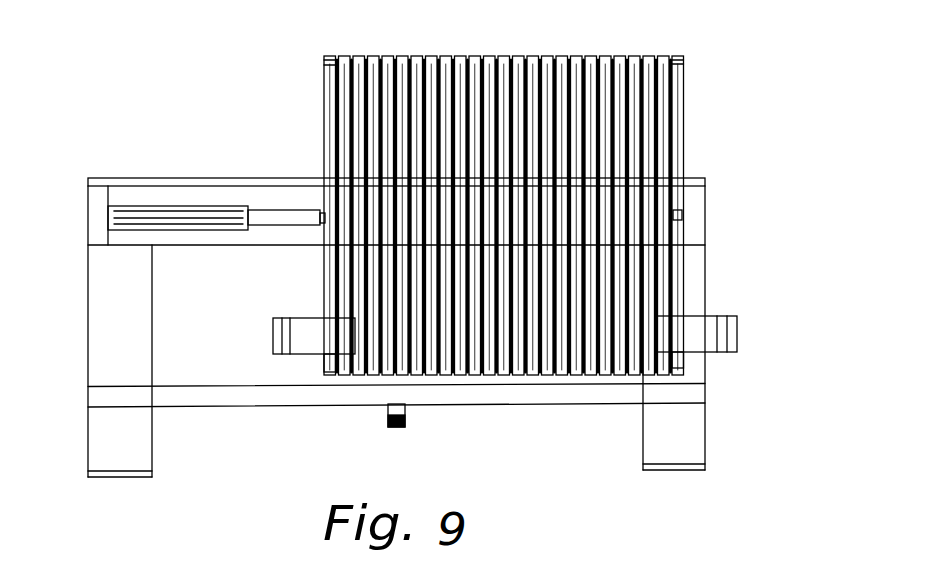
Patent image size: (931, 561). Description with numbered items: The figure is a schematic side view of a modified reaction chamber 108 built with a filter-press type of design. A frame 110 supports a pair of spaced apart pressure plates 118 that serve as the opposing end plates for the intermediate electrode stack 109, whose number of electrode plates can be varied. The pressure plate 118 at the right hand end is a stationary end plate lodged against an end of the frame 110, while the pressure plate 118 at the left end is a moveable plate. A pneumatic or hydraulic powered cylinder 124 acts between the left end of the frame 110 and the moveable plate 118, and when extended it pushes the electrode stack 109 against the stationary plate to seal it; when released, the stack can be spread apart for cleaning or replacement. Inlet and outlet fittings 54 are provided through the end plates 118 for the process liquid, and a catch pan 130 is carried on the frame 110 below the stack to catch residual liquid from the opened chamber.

The reaction chamber 108 is at (228, 124).
The frame 110 is at (95, 212).
The pressure plates 118 is at (326, 122).
The cylinder 124 is at (158, 212).
The inlet and outlet fittings 54 is at (305, 318).
The catch pan 130 is at (275, 393).
The electrode stack 109 is at (527, 372).